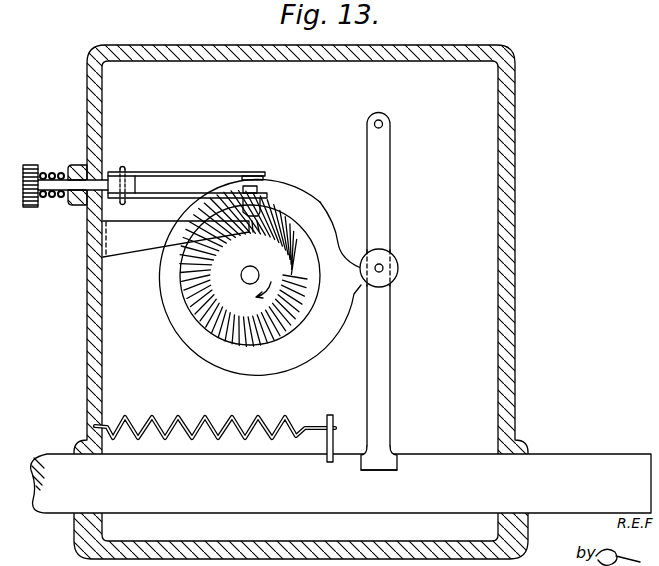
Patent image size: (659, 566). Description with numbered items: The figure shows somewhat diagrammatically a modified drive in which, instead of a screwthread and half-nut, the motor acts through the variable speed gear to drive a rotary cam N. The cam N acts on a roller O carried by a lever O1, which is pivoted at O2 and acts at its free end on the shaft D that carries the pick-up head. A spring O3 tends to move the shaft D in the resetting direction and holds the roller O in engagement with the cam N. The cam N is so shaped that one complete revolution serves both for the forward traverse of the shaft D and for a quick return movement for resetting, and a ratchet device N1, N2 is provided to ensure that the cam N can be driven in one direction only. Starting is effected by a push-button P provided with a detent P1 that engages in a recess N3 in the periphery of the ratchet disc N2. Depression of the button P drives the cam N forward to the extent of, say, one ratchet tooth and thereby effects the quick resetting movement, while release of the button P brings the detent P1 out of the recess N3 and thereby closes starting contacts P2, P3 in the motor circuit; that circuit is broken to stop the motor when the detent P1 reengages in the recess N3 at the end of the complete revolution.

The push-button P is at (30, 166).
The detent P1 is at (262, 207).
The starting contact P2 is at (262, 186).
The starting contact P3 is at (253, 173).
The rotary cam N is at (197, 338).
The ratchet device N1 is at (144, 232).
The ratchet disc N2 is at (262, 231).
The recess N3 is at (243, 210).
The roller O is at (400, 268).
The lever O1 is at (381, 345).
The pivot O2 is at (384, 121).
The spring O3 is at (205, 418).
The shaft D is at (442, 471).